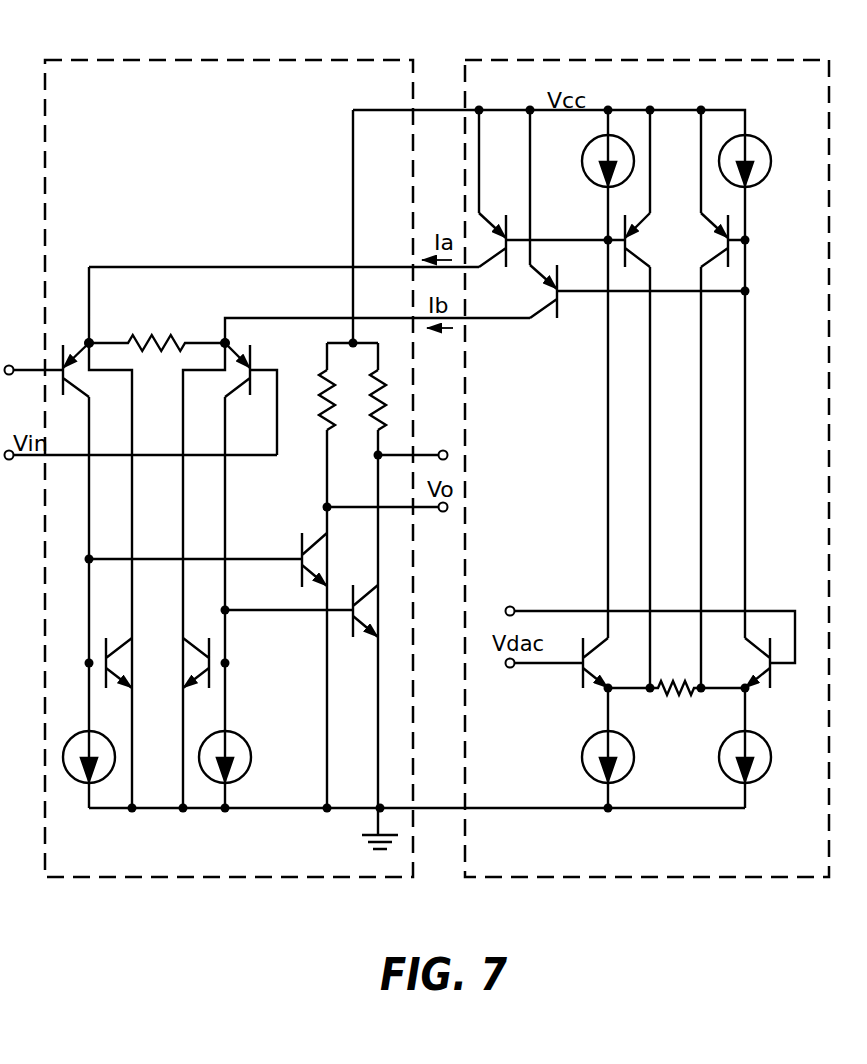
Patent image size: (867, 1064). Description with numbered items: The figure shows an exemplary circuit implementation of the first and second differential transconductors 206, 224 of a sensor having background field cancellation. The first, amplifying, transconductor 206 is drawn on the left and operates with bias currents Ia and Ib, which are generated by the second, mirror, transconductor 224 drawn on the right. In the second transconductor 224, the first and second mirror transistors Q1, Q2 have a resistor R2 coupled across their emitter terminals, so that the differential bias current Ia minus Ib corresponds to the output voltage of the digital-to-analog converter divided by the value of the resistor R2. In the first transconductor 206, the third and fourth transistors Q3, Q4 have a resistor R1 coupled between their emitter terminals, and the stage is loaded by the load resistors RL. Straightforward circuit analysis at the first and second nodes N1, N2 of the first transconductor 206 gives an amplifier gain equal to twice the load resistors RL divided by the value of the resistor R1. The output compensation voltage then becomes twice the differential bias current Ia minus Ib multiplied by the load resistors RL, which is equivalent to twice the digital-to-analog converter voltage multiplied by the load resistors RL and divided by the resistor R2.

The first differential transconductor 206 is at (396, 57).
The second differential transconductor 224 is at (480, 58).
The first mirror transistor Q1 is at (607, 663).
The second mirror transistor Q2 is at (747, 663).
The third transistor Q3 is at (96, 374).
The fourth transistor Q4 is at (219, 374).
The resistor R1 is at (157, 329).
The resistor R2 is at (676, 712).
The load resistors RL is at (353, 400).
The first node N1 is at (80, 335).
The second node N2 is at (218, 318).